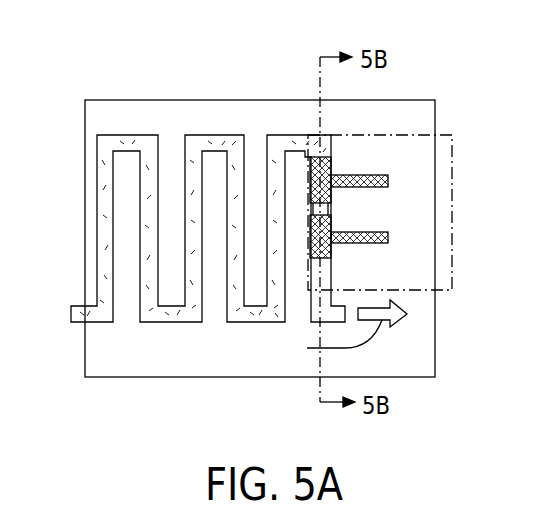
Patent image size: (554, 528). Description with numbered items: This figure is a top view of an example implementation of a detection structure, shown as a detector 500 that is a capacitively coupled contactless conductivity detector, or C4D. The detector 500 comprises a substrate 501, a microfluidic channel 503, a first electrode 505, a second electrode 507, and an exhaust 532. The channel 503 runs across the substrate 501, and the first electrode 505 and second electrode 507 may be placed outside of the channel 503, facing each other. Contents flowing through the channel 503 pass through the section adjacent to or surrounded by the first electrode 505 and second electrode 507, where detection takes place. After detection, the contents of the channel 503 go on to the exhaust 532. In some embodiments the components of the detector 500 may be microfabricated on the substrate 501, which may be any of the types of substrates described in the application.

The detector 500 is at (413, 133).
The substrate 501 is at (92, 358).
The microfluidic channel 503 is at (104, 233).
The first electrode 505 is at (388, 179).
The second electrode 507 is at (388, 235).
The exhaust 532 is at (410, 325).